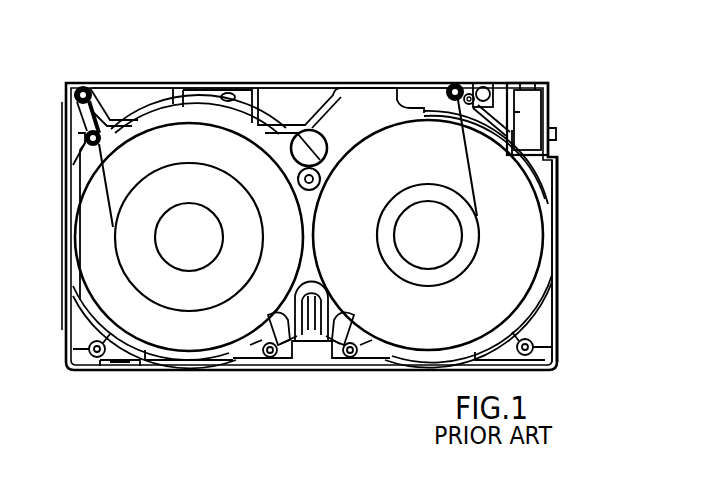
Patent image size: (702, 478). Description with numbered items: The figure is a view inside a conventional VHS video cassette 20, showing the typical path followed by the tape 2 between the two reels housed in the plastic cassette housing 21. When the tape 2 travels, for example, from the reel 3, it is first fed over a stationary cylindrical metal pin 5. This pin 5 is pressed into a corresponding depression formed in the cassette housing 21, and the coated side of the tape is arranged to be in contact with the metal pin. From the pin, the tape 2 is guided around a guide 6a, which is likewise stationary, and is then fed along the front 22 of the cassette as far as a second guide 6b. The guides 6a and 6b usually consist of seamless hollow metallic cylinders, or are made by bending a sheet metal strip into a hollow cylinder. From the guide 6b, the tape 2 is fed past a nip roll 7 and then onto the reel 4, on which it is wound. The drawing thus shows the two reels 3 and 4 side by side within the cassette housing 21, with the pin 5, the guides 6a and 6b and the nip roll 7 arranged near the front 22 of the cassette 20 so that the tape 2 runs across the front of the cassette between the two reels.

The video cassette 20 is at (158, 69).
The cassette housing 21 is at (557, 187).
The front of the cassette 22 is at (216, 82).
The tape 2 is at (105, 191).
The reel 3 is at (182, 305).
The reel 4 is at (428, 277).
The stationary cylindrical metal pin 5 is at (78, 137).
The guide 6a is at (81, 85).
The guide 6b is at (452, 84).
The nip roll 7 is at (472, 95).